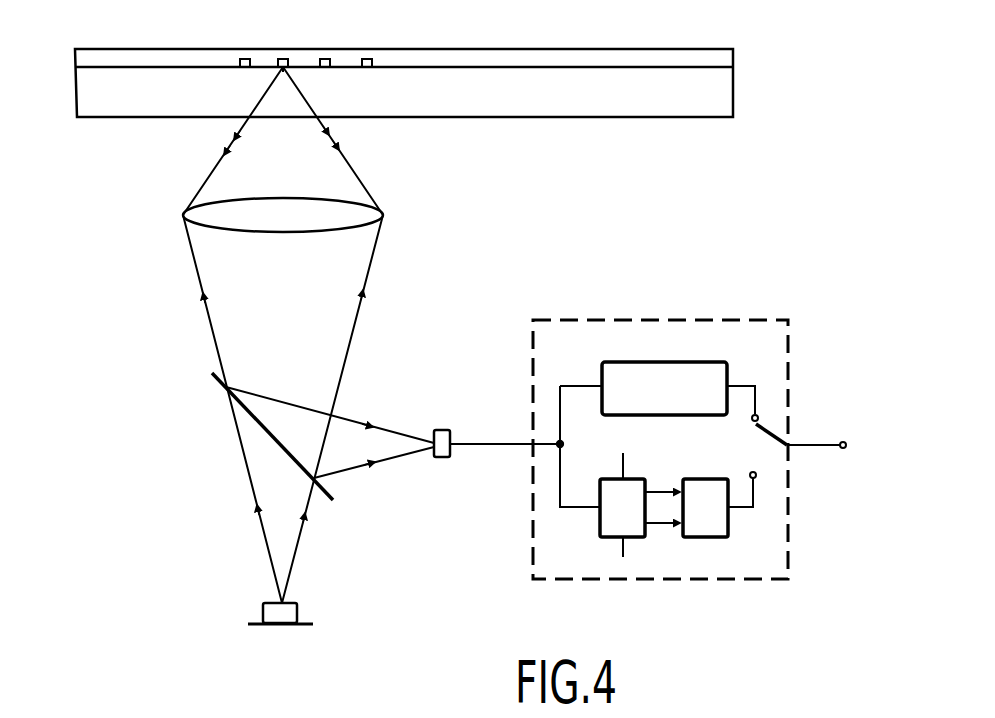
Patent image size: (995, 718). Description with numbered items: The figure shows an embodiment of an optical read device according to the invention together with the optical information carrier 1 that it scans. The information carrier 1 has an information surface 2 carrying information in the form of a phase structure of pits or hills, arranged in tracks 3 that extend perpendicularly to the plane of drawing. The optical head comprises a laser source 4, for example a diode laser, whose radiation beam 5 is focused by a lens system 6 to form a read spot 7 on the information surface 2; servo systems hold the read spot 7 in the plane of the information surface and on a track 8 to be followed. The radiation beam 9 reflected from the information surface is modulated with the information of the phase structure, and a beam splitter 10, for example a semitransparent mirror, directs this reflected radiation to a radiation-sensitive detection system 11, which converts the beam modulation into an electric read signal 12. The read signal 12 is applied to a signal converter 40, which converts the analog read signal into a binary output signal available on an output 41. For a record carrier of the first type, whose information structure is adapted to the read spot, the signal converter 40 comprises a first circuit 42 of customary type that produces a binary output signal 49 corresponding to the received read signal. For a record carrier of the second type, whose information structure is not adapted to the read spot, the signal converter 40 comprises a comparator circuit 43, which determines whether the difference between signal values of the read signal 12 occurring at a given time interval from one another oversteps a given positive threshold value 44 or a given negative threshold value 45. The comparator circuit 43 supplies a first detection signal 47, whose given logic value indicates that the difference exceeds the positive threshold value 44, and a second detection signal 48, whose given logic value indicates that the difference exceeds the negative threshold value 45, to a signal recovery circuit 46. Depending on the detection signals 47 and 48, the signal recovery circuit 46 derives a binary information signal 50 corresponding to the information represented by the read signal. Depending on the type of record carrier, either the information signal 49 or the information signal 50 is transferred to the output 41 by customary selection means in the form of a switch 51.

The optical information carrier 1 is at (728, 17).
The information surface 2 is at (625, 67).
The tracks 3 is at (366, 57).
The laser source 4 is at (297, 610).
The radiation beam 5 is at (206, 311).
The lens system 6 is at (220, 219).
The read spot 7 is at (284, 70).
The track to be followed 8 is at (285, 58).
The reflected radiation beam 9 is at (352, 170).
The beam splitter 10 is at (212, 374).
The radiation-sensitive detection system 11 is at (444, 458).
The read signal 12 is at (508, 447).
The signal converter 40 is at (600, 318).
The output 41 is at (843, 441).
The first circuit 42 is at (604, 361).
The comparator circuit 43 is at (600, 527).
The positive threshold value 44 is at (618, 461).
The negative threshold value 45 is at (624, 555).
The signal recovery circuit 46 is at (728, 525).
The first detection signal 47 is at (655, 490).
The second detection signal 48 is at (663, 525).
The binary output signal 49 is at (757, 402).
The binary information signal 50 is at (755, 494).
The switch 51 is at (762, 435).